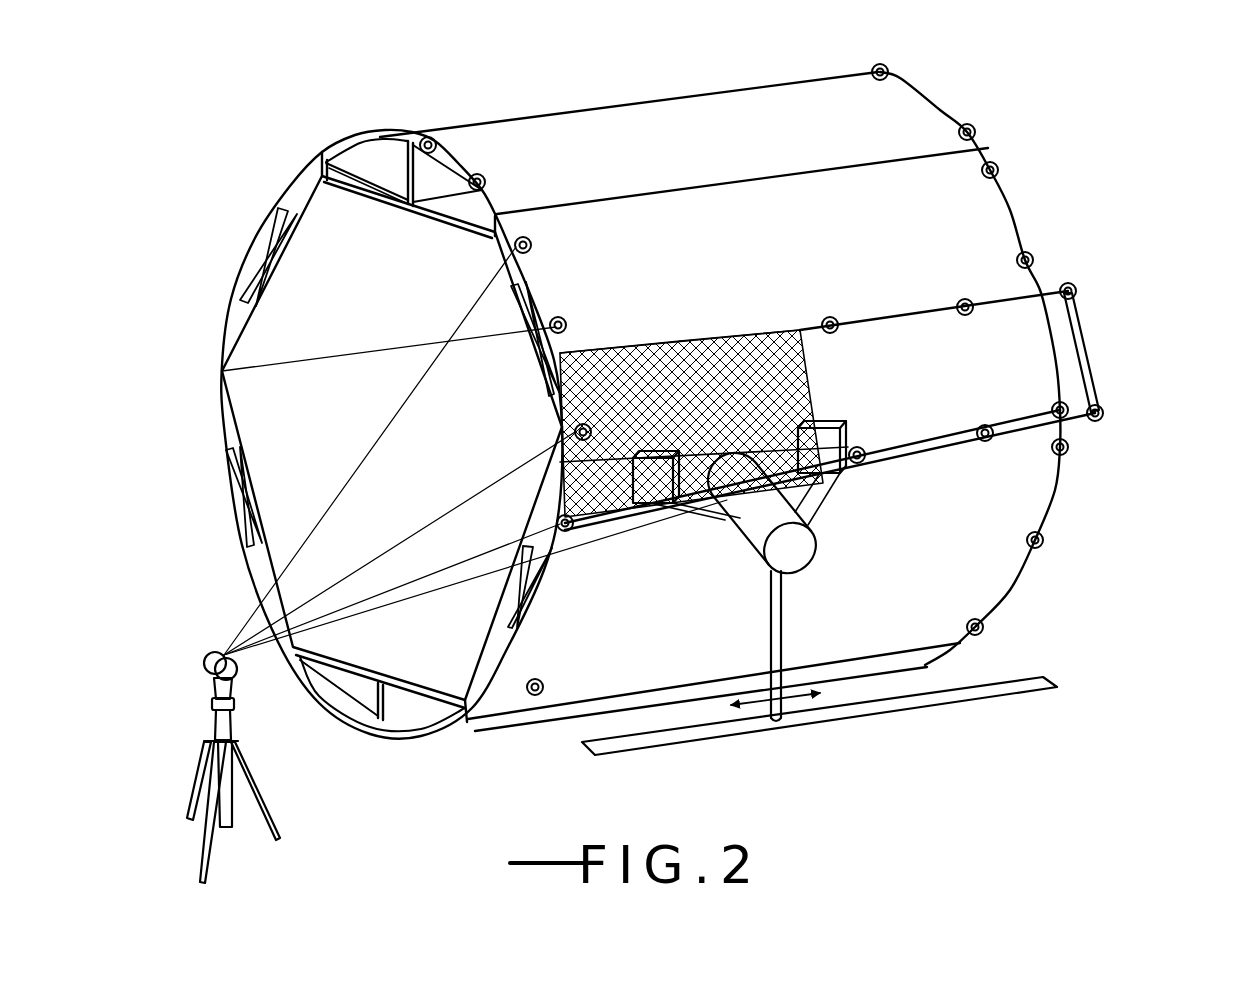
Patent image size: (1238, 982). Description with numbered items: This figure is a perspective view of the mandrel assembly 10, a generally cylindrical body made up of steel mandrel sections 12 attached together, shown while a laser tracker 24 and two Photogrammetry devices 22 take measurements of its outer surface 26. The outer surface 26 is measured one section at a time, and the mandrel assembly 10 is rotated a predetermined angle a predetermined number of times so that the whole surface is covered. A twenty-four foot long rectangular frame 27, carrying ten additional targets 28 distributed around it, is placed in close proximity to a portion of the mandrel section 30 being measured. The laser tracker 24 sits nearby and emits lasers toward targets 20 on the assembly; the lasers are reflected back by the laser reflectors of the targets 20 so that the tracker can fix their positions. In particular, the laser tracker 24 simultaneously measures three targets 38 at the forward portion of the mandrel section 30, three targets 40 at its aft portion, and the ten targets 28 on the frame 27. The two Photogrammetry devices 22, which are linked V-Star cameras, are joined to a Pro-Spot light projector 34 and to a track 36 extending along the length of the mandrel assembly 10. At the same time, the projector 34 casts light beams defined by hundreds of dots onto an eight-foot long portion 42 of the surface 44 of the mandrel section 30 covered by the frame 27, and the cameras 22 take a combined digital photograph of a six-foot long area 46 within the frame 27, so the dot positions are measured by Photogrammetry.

The mandrel assembly 10 is at (1142, 372).
The mandrel section 12 is at (500, 140).
The target 20 is at (556, 525).
The Photogrammetry device 22 is at (652, 505).
The laser tracker 24 is at (203, 738).
The outer surface 26 is at (990, 225).
The rectangular frame 27 is at (1092, 382).
The additional target 28 is at (830, 316).
The mandrel section being measured 30 is at (880, 395).
The Pro-Spot light projector 34 is at (797, 562).
The track 36 is at (1018, 697).
The forward target 38 is at (514, 250).
The aft target 40 is at (993, 215).
The eight-foot long portion 42 is at (702, 380).
The surface of the mandrel section 44 is at (650, 390).
The six-foot long area 46 is at (740, 370).